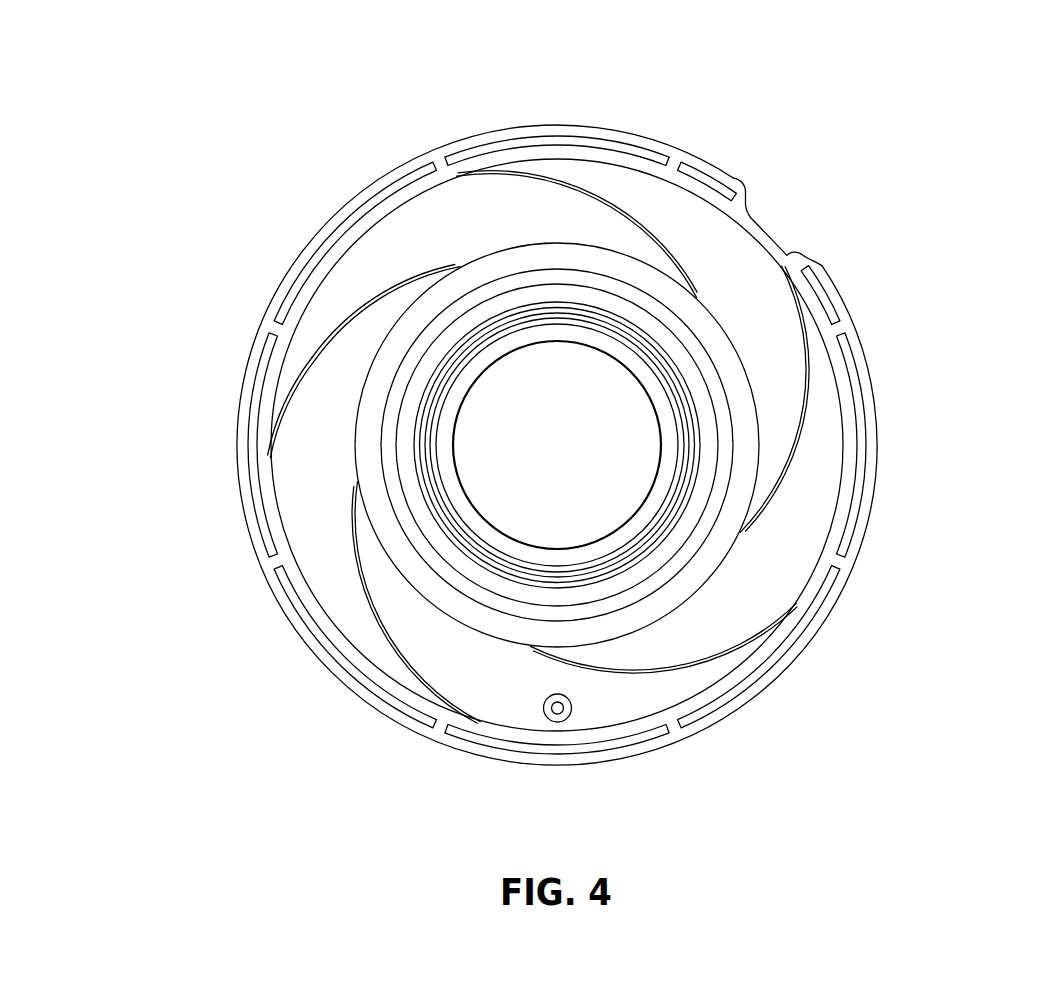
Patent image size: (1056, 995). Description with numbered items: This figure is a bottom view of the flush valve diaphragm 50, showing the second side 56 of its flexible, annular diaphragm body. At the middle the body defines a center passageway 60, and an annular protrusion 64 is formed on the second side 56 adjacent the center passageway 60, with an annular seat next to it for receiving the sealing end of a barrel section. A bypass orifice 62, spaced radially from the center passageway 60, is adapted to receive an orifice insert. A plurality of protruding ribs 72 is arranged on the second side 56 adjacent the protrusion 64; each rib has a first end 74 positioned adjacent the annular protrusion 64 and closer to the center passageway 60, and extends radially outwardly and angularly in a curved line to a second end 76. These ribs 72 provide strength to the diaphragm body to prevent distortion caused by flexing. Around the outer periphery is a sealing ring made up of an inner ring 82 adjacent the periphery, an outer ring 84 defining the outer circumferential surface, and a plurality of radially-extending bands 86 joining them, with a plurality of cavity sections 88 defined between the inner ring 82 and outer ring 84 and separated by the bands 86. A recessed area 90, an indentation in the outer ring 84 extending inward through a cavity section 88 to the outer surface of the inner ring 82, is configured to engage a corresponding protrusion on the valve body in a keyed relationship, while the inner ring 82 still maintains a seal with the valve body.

The flush valve diaphragm 50 is at (942, 247).
The second side 56 is at (318, 573).
The center passageway 60 is at (620, 410).
The bypass orifice 62 is at (564, 721).
The annular protrusion 64 is at (688, 437).
The protruding ribs 72 is at (340, 312).
The first end 74 is at (460, 266).
The second end 76 is at (273, 467).
The inner ring 82 is at (569, 158).
The outer ring 84 is at (636, 142).
The radially-extending bands 86 is at (698, 163).
The cavity sections 88 is at (719, 193).
The recessed area 90 is at (777, 222).